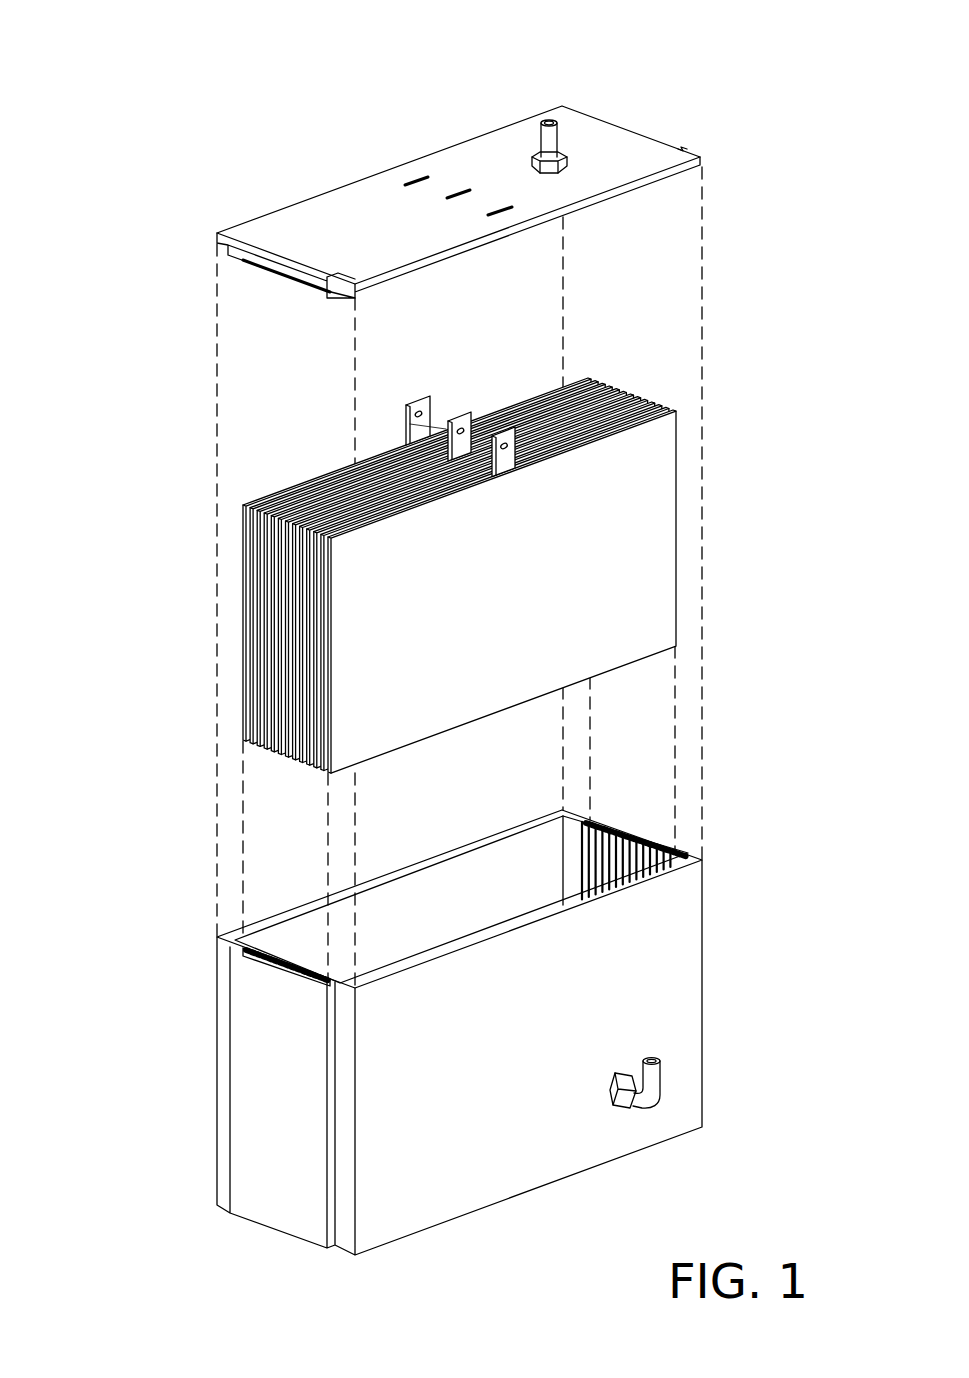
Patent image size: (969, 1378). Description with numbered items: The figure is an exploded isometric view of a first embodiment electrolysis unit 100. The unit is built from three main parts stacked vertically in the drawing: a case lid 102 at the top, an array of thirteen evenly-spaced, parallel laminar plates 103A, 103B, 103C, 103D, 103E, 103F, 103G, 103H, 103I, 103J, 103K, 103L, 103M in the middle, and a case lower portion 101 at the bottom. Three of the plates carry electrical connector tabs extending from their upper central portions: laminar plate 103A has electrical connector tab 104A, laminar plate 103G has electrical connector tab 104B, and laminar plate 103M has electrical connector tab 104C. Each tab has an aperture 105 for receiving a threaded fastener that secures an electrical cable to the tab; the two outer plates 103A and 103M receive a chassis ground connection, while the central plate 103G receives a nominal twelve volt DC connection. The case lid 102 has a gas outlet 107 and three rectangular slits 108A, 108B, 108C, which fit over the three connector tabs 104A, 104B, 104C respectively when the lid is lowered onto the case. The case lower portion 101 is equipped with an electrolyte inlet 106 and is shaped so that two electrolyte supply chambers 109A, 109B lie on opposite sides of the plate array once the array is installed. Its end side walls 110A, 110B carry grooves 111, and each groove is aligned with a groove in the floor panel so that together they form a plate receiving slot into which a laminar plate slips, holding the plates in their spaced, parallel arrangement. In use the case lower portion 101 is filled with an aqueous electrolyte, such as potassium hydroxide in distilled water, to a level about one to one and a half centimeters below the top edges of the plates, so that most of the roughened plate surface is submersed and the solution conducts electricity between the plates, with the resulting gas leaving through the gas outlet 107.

The electrolysis unit 100 is at (138, 123).
The case lower portion 101 is at (497, 1155).
The case lid 102 is at (340, 208).
The laminar plate 103A is at (655, 443).
The laminar plate 103B is at (666, 405).
The laminar plate 103C is at (659, 403).
The laminar plate 103D is at (652, 401).
The laminar plate 103E is at (645, 398).
The laminar plate 103F is at (638, 395).
The laminar plate 103G is at (631, 392).
The laminar plate 103H is at (282, 702).
The laminar plate 103I is at (275, 663).
The laminar plate 103J is at (268, 625).
The laminar plate 103K is at (261, 588).
The laminar plate 103L is at (254, 550).
The laminar plate 103M is at (247, 510).
The electrical connector tab 104A is at (500, 427).
The electrical connector tab 104B is at (456, 412).
The electrical connector tab 104C is at (412, 396).
The aperture 105 is at (442, 429).
The electrolyte inlet 106 is at (652, 1078).
The gas outlet 107 is at (550, 140).
The rectangular slit 108A is at (495, 197).
The rectangular slit 108B is at (456, 182).
The rectangular slit 108C is at (414, 165).
The electrolyte supply chamber 109A is at (516, 908).
The electrolyte supply chamber 109B is at (391, 884).
The end side wall 110A is at (633, 828).
The end side wall 110B is at (268, 990).
The grooves 111 is at (252, 958).